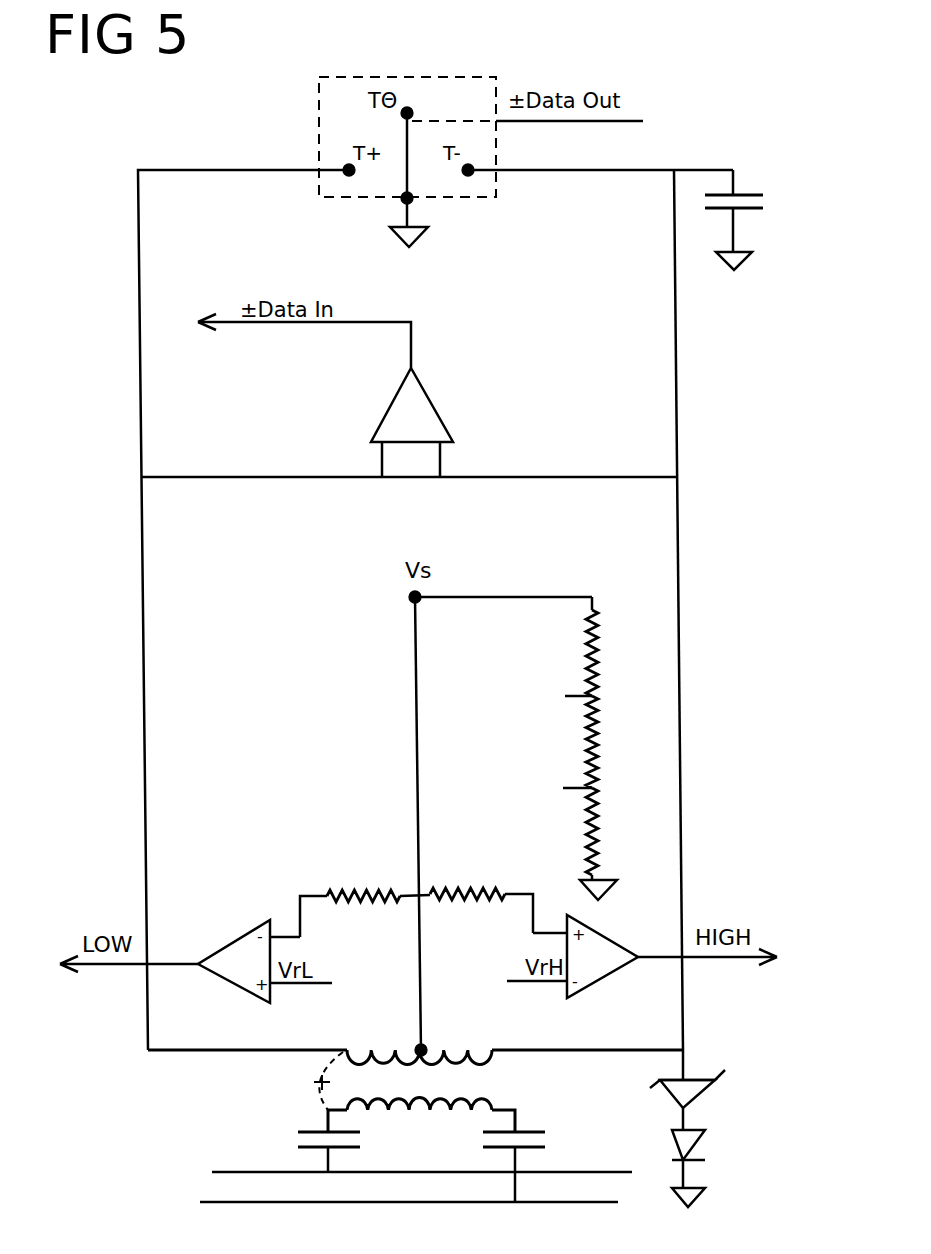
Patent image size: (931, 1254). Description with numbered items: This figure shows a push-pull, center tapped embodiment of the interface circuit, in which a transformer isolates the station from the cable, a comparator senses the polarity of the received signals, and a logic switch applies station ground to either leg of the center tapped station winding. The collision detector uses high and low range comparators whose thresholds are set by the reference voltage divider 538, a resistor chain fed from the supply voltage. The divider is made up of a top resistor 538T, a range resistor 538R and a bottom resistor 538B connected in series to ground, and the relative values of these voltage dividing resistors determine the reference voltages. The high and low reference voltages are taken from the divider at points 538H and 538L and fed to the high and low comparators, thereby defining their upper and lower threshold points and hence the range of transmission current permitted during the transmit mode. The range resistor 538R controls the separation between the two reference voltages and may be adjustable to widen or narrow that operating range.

The reference voltage divider 538 is at (601, 729).
The top voltage dividing resistor 538T is at (628, 653).
The range voltage dividing resistor 538R is at (630, 742).
The bottom voltage dividing resistor 538B is at (630, 831).
The low reference voltage point 538L is at (362, 896).
The high reference voltage point 538H is at (489, 893).